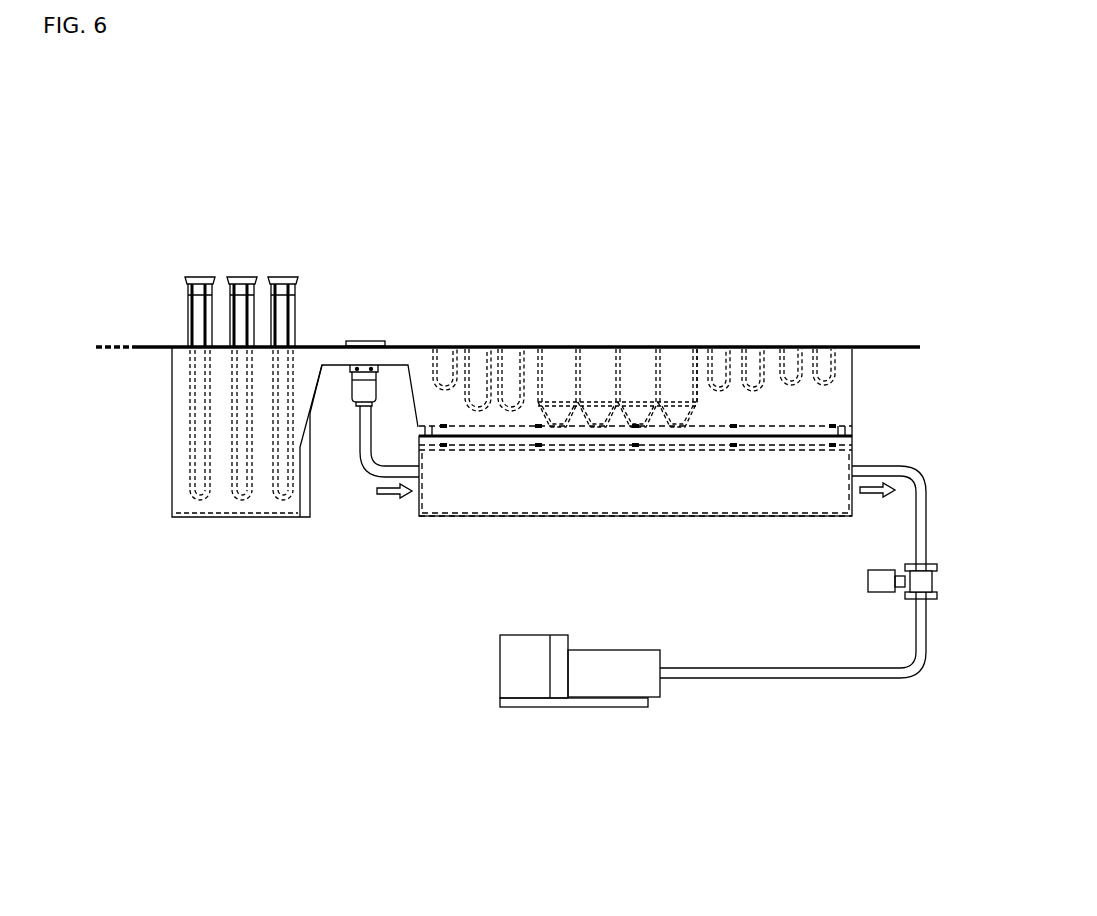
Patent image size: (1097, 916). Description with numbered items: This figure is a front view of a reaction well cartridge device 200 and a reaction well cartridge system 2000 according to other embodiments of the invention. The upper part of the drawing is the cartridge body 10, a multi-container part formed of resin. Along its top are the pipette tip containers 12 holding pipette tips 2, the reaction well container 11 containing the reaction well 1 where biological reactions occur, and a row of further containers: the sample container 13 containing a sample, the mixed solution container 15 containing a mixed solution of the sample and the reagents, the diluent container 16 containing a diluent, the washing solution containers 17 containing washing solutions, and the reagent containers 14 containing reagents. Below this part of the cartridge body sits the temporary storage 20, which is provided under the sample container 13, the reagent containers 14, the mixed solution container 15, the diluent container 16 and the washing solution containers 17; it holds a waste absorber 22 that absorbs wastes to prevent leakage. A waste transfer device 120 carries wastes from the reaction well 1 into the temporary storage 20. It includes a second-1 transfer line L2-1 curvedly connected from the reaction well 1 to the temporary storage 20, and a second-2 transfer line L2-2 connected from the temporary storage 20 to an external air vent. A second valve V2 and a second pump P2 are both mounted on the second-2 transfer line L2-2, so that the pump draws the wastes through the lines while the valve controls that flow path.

The reaction well cartridge system 2000 is at (117, 137).
The reaction well cartridge device 200 is at (186, 233).
The pipette tips 2 is at (283, 277).
The pipette tip containers 12 is at (285, 420).
The cartridge body 10 is at (898, 338).
The reaction well 1 is at (363, 340).
The reaction well container 11 is at (388, 340).
The sample container 13 is at (446, 345).
The mixed solution container 15 is at (483, 345).
The diluent container 16 is at (517, 345).
The washing solution containers 17 is at (680, 345).
The reagent containers 14 is at (825, 345).
The temporary storage 20 is at (563, 523).
The waste absorber 22 is at (697, 518).
The second-1 transfer line L2-1 is at (364, 468).
The second-2 transfer line L2-2 is at (780, 678).
The second valve V2 is at (868, 579).
The second pump P2 is at (626, 683).
The waste transfer device 120 is at (630, 797).